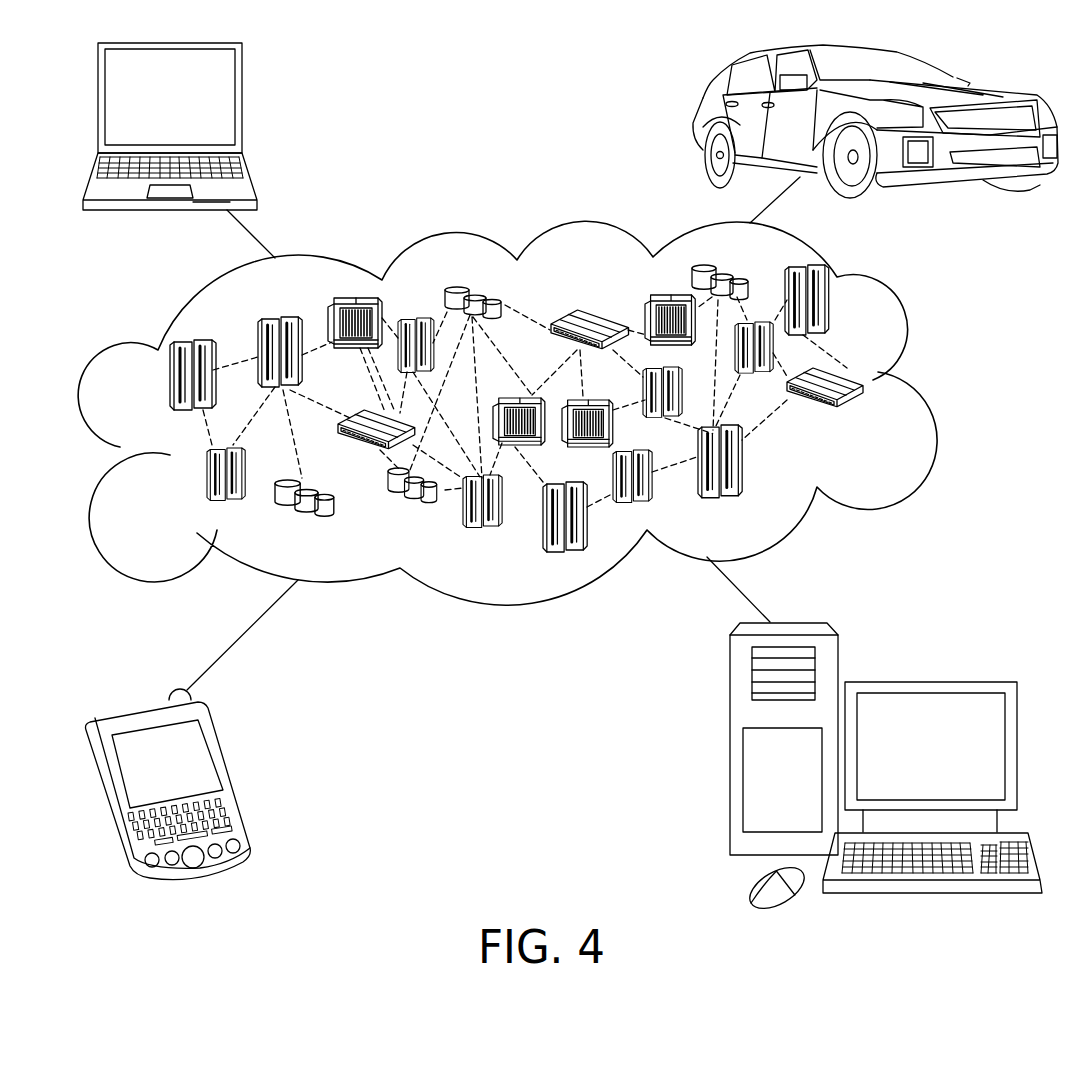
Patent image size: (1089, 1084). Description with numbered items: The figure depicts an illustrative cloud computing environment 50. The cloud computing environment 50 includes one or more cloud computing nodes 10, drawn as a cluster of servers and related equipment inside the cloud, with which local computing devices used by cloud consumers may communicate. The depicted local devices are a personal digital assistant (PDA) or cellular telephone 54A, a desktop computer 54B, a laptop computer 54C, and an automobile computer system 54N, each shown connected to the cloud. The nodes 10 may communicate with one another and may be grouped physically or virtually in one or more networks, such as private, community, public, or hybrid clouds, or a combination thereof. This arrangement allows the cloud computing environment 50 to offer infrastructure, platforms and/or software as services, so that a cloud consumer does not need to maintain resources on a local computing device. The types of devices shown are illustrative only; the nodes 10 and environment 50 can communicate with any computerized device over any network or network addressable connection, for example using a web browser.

The cloud computing environment 50 is at (930, 388).
The cloud computing nodes 10 is at (870, 418).
The personal digital assistant (PDA) or cellular telephone 54A is at (233, 778).
The desktop computer 54B is at (928, 682).
The laptop computer 54C is at (243, 108).
The automobile computer system 54N is at (700, 122).